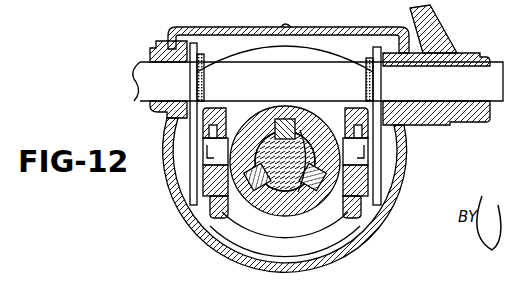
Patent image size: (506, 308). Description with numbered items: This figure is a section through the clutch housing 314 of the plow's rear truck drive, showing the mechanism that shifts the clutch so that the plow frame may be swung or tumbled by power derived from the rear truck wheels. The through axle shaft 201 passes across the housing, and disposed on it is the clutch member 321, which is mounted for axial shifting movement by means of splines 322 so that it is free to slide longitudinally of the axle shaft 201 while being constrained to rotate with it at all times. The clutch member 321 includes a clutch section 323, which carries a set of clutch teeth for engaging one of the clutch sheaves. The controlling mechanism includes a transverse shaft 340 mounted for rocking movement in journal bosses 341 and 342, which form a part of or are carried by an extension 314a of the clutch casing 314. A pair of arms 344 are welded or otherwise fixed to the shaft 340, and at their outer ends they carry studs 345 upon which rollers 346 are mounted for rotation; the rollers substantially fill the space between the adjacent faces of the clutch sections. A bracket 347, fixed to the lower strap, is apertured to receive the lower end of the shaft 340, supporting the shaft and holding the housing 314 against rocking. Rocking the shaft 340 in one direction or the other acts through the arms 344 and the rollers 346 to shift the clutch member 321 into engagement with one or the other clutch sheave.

The through axle shaft 201 is at (298, 192).
The clutch housing 314 is at (409, 157).
The extension of the clutch casing 314a is at (324, 31).
The clutch member 321 is at (252, 122).
The splines 322 is at (300, 116).
The clutch section 323 is at (314, 222).
The transverse shaft 340 is at (150, 86).
The journal boss 341 is at (164, 50).
The journal boss 342 is at (410, 113).
The arms 344 is at (197, 61).
The studs 345 is at (206, 172).
The rollers 346 is at (218, 202).
The bracket 347 is at (442, 44).